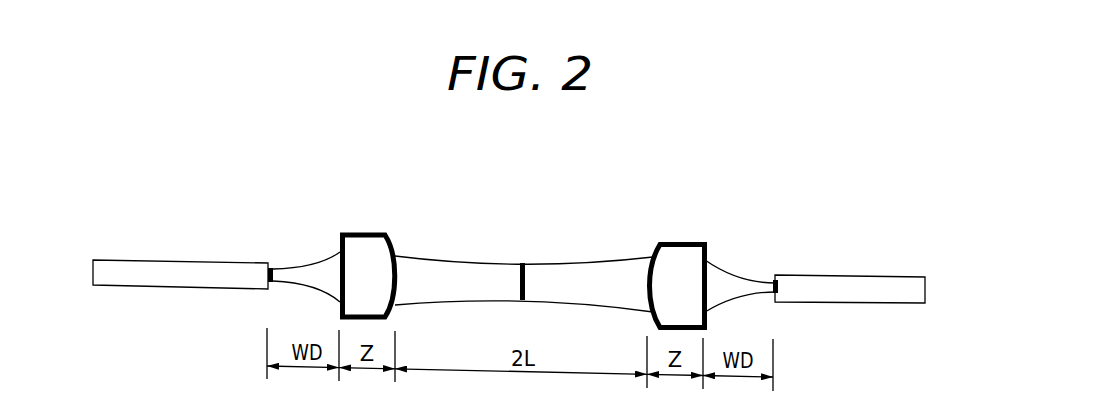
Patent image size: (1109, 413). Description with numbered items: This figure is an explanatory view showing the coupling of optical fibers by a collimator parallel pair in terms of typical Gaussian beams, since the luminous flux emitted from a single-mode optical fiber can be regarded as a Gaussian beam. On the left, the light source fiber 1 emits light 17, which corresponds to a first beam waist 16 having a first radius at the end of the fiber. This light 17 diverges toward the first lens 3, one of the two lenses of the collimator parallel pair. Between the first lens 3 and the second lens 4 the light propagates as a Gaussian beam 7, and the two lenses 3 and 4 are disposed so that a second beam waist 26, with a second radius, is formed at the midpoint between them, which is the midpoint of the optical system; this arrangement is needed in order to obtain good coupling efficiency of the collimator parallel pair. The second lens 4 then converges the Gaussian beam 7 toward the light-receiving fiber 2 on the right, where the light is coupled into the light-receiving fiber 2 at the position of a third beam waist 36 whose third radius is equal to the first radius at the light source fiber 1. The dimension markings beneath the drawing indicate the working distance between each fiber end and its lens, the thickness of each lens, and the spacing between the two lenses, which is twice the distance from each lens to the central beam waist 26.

The light source fiber 1 is at (161, 272).
The light-receiving fiber 2 is at (830, 283).
The first lens 3 is at (368, 250).
The second lens 4 is at (676, 262).
The Gaussian beam 7 is at (573, 278).
The first beam waist 16 is at (269, 226).
The light emitted from the light source fiber 17 is at (312, 273).
The second beam waist 26 is at (527, 218).
The third beam waist 36 is at (768, 242).